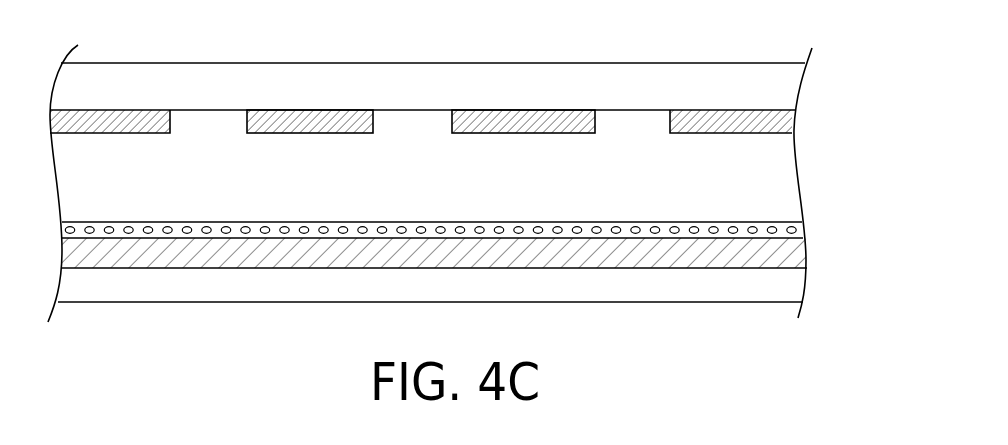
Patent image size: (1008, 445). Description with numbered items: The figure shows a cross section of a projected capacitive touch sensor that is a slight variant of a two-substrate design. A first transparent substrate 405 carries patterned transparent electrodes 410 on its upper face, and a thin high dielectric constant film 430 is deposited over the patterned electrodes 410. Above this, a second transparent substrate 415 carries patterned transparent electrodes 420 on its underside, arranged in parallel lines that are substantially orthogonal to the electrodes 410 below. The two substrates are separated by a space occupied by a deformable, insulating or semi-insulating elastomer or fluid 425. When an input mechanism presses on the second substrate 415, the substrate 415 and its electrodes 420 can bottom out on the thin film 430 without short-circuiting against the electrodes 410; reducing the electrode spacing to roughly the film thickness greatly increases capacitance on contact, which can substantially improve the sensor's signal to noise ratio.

The first transparent substrate 405 is at (808, 285).
The patterned transparent electrodes 410 is at (807, 253).
The second transparent substrate 415 is at (750, 63).
The patterned transparent electrodes 420 is at (157, 133).
The deformable insulating elastomer or fluid 425 is at (410, 192).
The thin high dielectric constant film 430 is at (215, 223).